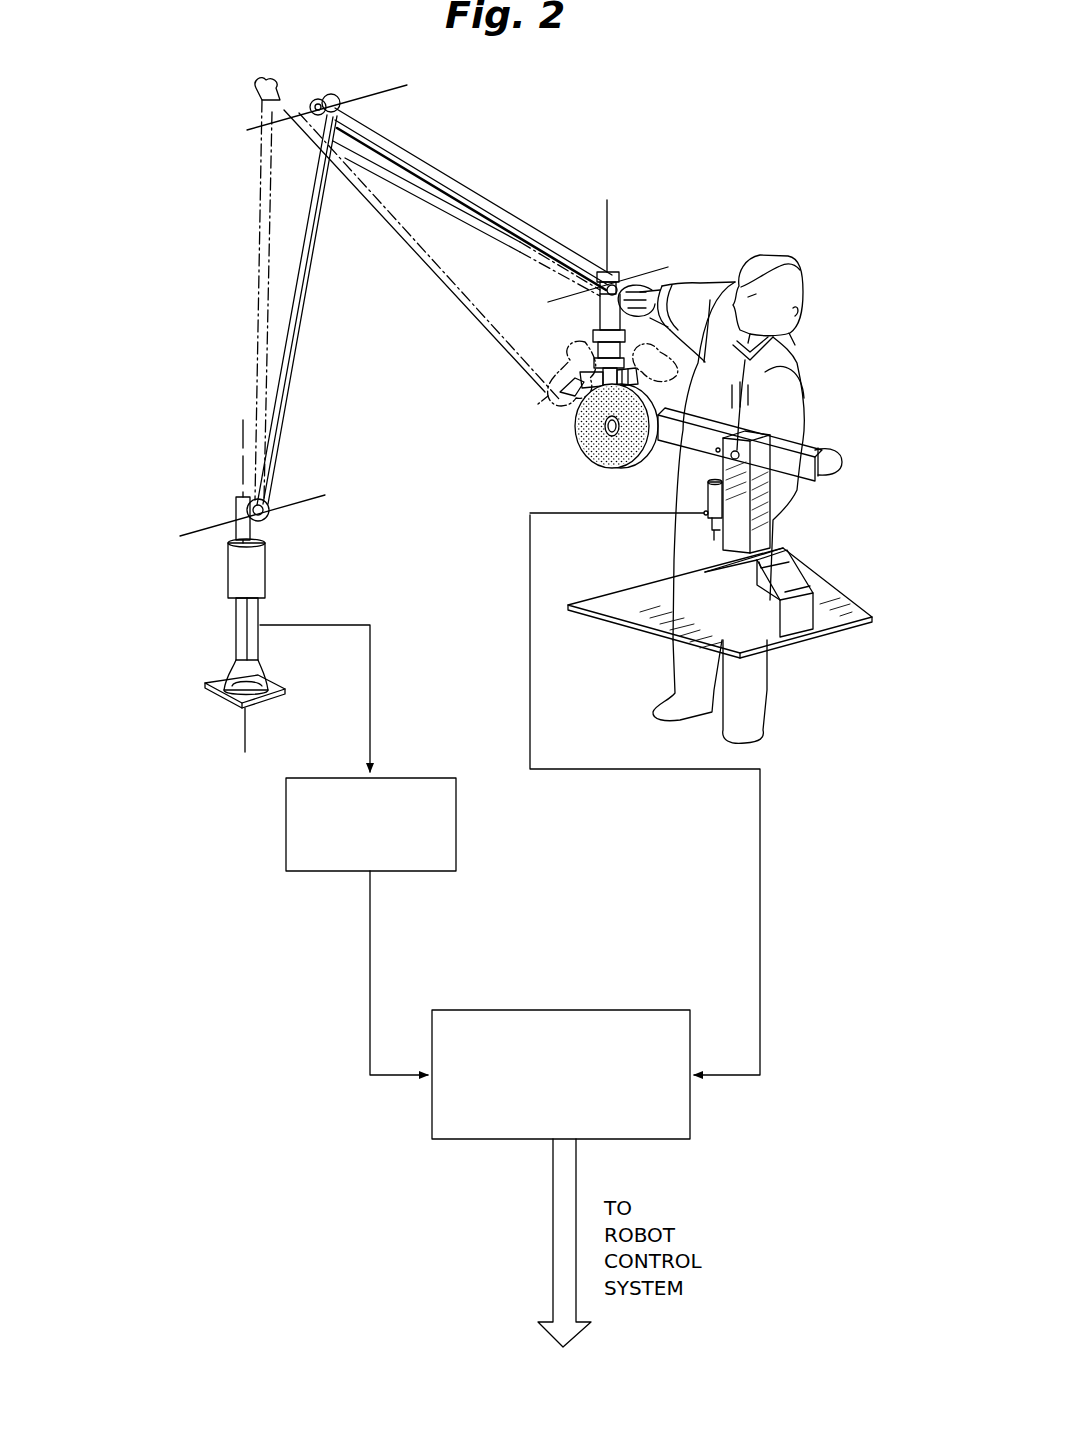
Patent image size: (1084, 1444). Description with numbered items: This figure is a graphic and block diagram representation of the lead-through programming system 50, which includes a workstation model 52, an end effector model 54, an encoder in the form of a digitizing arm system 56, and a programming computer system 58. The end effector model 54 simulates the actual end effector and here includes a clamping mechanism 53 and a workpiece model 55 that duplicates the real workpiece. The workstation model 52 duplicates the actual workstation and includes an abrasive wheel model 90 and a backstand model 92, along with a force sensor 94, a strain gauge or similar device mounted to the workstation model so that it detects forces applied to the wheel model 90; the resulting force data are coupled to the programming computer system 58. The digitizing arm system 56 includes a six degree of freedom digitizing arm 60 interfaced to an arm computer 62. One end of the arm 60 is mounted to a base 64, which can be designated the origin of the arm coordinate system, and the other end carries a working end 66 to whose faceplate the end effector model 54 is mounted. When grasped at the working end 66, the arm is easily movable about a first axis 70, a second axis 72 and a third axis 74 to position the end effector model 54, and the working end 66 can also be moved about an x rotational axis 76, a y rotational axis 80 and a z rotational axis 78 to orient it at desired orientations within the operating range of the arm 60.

The lead-through programming system 50 is at (293, 900).
The workstation model 52 is at (843, 438).
The clamping mechanism 53 is at (596, 370).
The end effector model 54 is at (552, 398).
The workpiece model 55 is at (580, 420).
The digitizing arm system 56 is at (222, 812).
The programming computer system 58 is at (602, 1012).
The digitizing arm 60 is at (292, 432).
The arm computer 62 is at (405, 782).
The base 64 is at (218, 692).
The working end 66 is at (598, 330).
The first axis 70 is at (243, 437).
The second axis 72 is at (200, 527).
The third axis 74 is at (410, 88).
The x rotational axis 76 is at (697, 283).
The z rotational axis 78 is at (606, 256).
The y rotational axis 80 is at (596, 286).
The abrasive wheel model 90 is at (620, 462).
The backstand model 92 is at (807, 478).
The force sensor 94 is at (676, 513).